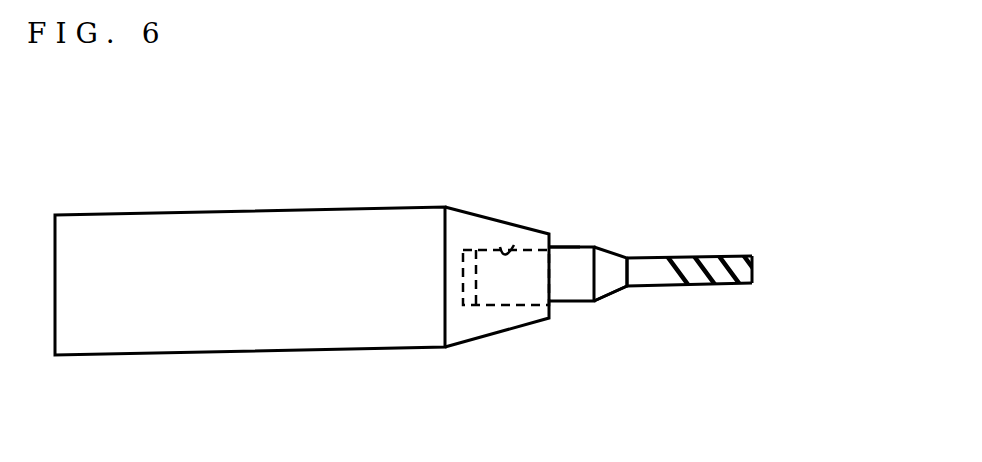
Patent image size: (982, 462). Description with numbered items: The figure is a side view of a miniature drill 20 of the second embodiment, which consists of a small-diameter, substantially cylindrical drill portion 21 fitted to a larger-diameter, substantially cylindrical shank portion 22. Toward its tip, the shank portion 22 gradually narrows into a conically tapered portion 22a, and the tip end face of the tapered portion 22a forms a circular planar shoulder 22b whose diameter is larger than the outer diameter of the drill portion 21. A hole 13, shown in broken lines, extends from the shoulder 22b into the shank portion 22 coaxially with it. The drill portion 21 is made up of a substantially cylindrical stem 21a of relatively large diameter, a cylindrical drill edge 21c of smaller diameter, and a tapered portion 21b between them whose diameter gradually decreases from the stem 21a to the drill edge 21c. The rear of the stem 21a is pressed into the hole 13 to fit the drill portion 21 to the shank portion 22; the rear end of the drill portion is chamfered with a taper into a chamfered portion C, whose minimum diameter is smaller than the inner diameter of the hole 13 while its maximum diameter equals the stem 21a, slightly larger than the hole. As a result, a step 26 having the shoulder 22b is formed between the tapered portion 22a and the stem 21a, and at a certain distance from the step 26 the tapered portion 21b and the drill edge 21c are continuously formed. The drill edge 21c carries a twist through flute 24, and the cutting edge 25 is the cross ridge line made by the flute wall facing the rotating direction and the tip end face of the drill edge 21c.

The miniature drill 20 is at (450, 180).
The shank portion 22 is at (341, 208).
The tapered portion 22a is at (480, 337).
The shoulder 22b is at (553, 307).
The step 26 is at (557, 247).
The chamfered portion C is at (464, 250).
The hole 13 is at (516, 238).
The drill portion 21 is at (648, 233).
The stem 21a is at (590, 247).
The tapered portion 21b is at (610, 293).
The drill edge 21c is at (730, 285).
The twist through flute 24 is at (728, 255).
The cutting edge 25 is at (752, 260).